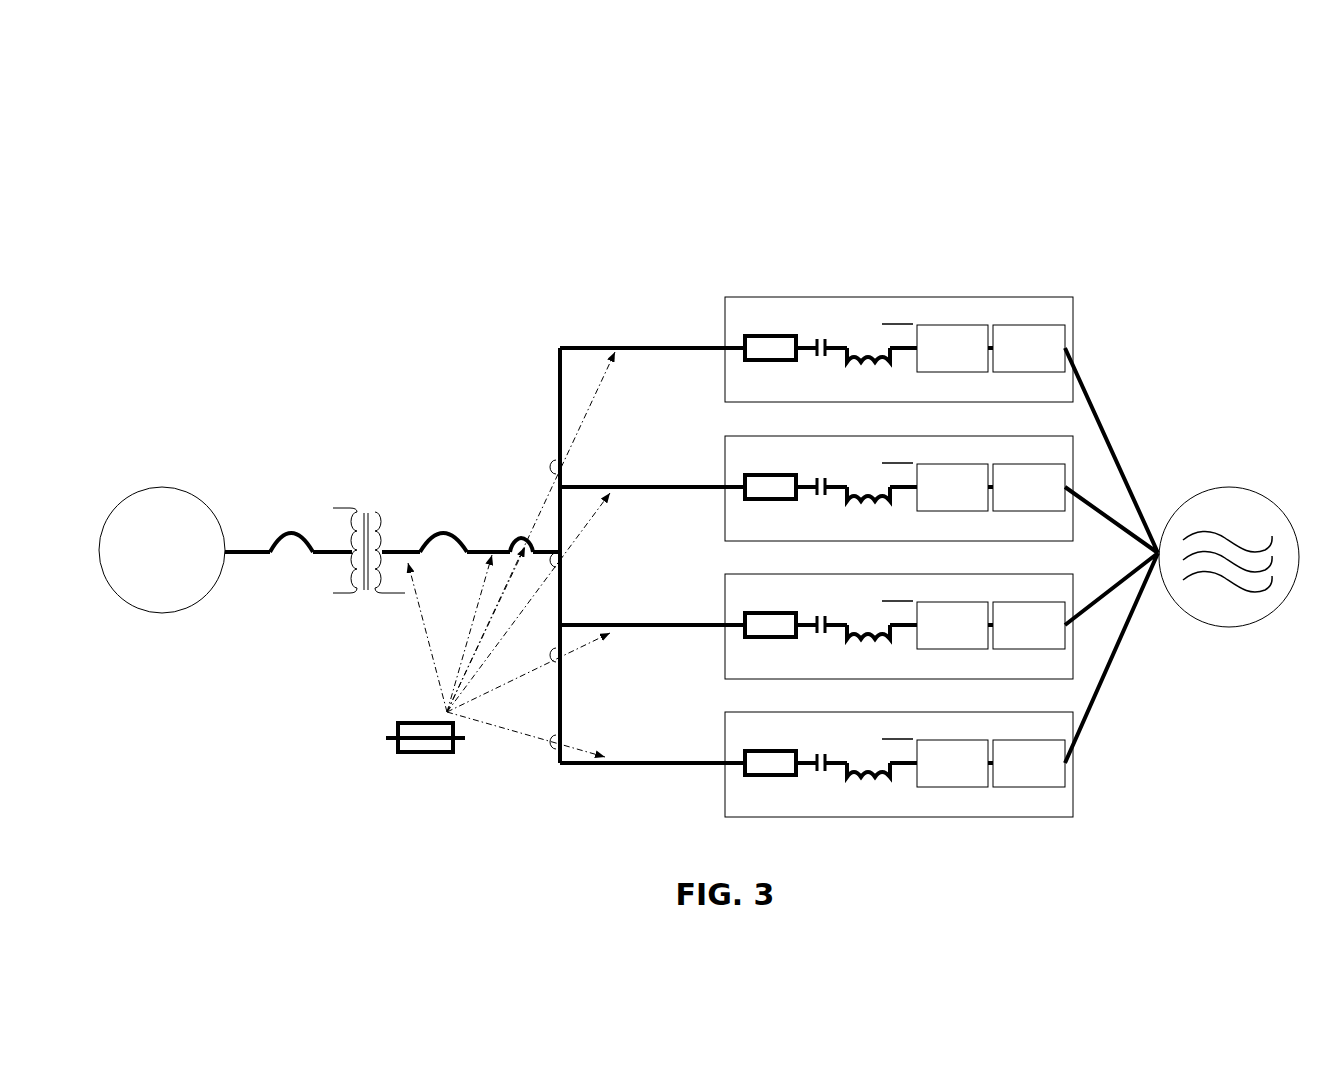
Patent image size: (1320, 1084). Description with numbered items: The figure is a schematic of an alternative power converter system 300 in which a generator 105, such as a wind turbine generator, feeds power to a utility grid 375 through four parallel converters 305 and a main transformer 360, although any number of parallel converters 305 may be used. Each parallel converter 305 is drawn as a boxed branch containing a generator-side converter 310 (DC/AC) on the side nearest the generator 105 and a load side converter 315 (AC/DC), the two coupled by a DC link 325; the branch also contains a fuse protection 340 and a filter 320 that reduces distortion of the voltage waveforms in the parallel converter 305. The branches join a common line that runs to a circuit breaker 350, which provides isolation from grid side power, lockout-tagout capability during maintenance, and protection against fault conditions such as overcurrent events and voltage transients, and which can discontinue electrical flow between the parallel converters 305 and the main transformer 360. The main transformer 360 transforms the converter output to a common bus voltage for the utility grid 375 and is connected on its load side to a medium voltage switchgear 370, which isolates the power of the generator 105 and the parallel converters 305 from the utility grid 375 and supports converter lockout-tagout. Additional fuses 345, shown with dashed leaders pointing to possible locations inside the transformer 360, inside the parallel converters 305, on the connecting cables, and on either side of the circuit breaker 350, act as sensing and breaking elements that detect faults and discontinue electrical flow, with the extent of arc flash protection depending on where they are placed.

The alternative power converter system 300 is at (1242, 216).
The utility grid 375 is at (158, 488).
The medium voltage (MV) switchgear 370 is at (286, 541).
The main transformer 360 is at (375, 512).
The circuit breaker 350 is at (446, 536).
The additional fuses 345 is at (431, 755).
The parallel converter 305 is at (899, 557).
The fuse protection 340 is at (766, 336).
The DC link 325 is at (826, 360).
The filter 320 is at (876, 368).
The load side converter (AC/DC) 315 is at (962, 325).
The generator-side converter (DC/AC) 310 is at (1030, 325).
The generator 105 is at (1230, 488).